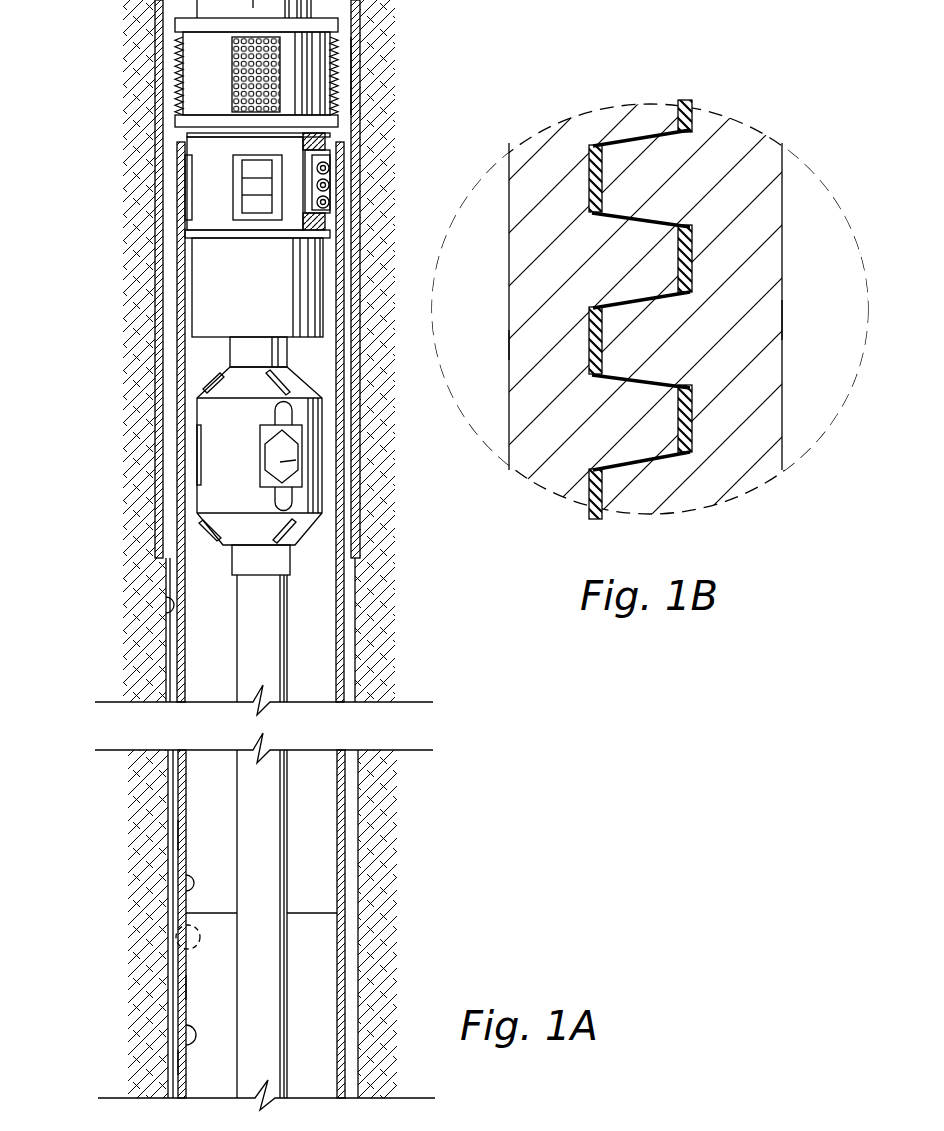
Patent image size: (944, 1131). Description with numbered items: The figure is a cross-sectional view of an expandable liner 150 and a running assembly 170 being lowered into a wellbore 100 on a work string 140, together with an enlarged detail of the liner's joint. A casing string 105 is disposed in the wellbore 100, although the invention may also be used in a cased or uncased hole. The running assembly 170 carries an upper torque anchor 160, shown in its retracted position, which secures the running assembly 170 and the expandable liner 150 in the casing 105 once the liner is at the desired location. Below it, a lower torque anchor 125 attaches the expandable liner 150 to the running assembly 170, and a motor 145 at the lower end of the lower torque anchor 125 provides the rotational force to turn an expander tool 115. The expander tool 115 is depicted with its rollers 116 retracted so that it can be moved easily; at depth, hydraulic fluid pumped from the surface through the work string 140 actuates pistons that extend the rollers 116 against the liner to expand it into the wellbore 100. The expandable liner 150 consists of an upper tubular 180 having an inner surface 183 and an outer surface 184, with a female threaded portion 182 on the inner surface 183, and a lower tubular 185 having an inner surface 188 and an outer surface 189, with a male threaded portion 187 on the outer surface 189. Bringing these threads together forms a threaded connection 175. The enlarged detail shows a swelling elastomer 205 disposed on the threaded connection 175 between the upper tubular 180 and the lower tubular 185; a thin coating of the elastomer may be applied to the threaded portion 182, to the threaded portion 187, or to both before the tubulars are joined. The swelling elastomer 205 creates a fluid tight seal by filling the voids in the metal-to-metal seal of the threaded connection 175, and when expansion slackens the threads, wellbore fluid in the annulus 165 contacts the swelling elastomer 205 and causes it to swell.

In FIG. 1A, the wellbore 100 is at (166, 600).
In FIG. 1A, the casing string 105 is at (157, 43).
In FIG. 1A, the expander tool 115 is at (220, 417).
In FIG. 1A, the rollers 116 is at (200, 448).
In FIG. 1A, the lower torque anchor 125 is at (207, 172).
In FIG. 1A, the work string 140 is at (200, 12).
In FIG. 1A, the motor 145 is at (213, 290).
In FIG. 1A, the expandable liner 150 is at (176, 312).
In FIG. 1A, the upper torque anchor 160 is at (205, 70).
In FIG. 1A, the annulus 165 is at (212, 782).
In FIG. 1A, the running assembly 170 is at (350, 86).
In FIG. 1A, the threaded connection 175 is at (178, 952).
In FIG. 1B, the threaded connection 175 is at (648, 309).
In FIG. 1A, the upper tubular 180 is at (177, 240).
In FIG. 1B, the upper tubular 180 is at (522, 226).
In FIG. 1B, the threaded portion 182 is at (589, 316).
In FIG. 1A, the inner surface 183 is at (185, 872).
In FIG. 1A, the outer surface 184 is at (178, 838).
In FIG. 1B, the outer surface 184 is at (509, 346).
In FIG. 1A, the lower tubular 185 is at (183, 1063).
In FIG. 1B, the lower tubular 185 is at (773, 230).
In FIG. 1B, the threaded portion 187 is at (692, 402).
In FIG. 1A, the inner surface 188 is at (185, 1025).
In FIG. 1B, the inner surface 188 is at (782, 332).
In FIG. 1A, the outer surface 189 is at (183, 987).
In FIG. 1B, the swelling elastomer 205 is at (692, 273).